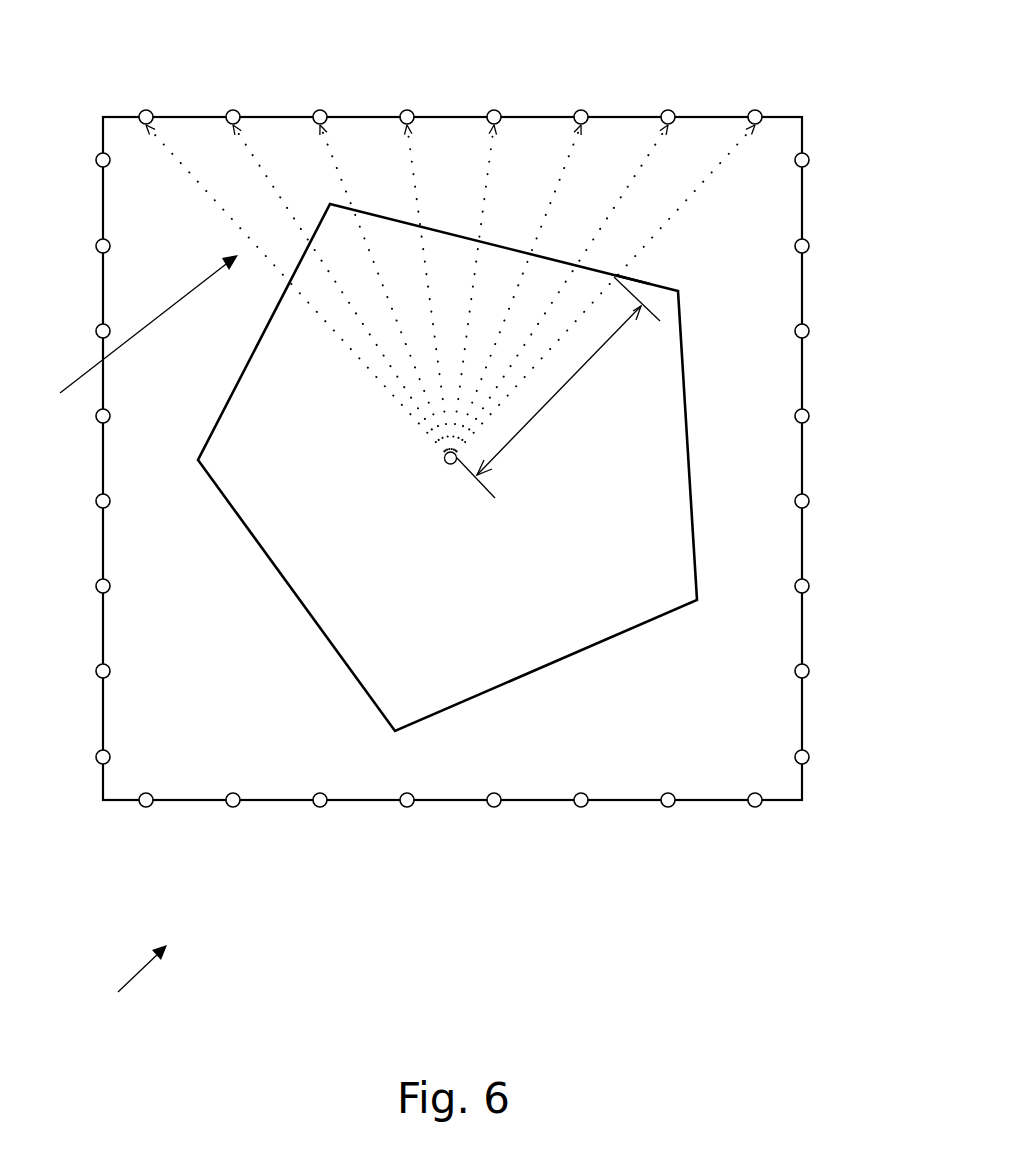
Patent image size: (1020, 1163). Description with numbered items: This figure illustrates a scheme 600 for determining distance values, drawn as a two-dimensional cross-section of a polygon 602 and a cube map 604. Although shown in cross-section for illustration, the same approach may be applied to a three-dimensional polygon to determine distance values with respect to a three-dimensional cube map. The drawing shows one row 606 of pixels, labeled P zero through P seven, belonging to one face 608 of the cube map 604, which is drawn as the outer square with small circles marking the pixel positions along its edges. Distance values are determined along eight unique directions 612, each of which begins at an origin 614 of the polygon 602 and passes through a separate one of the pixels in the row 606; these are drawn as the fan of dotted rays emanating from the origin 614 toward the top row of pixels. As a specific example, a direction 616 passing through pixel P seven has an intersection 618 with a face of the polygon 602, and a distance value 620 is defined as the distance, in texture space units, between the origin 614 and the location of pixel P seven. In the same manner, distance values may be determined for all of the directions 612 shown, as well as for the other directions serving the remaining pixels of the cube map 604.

The scheme 600 is at (122, 986).
The polygon 602 is at (447, 467).
The cube map 604 is at (818, 816).
The row of pixels 606 is at (812, 75).
The face 608 is at (117, 115).
The directions 612 is at (126, 342).
The origin 614 is at (449, 466).
The direction 616 is at (698, 182).
The intersection 618 is at (628, 272).
The distance value 620 is at (557, 393).